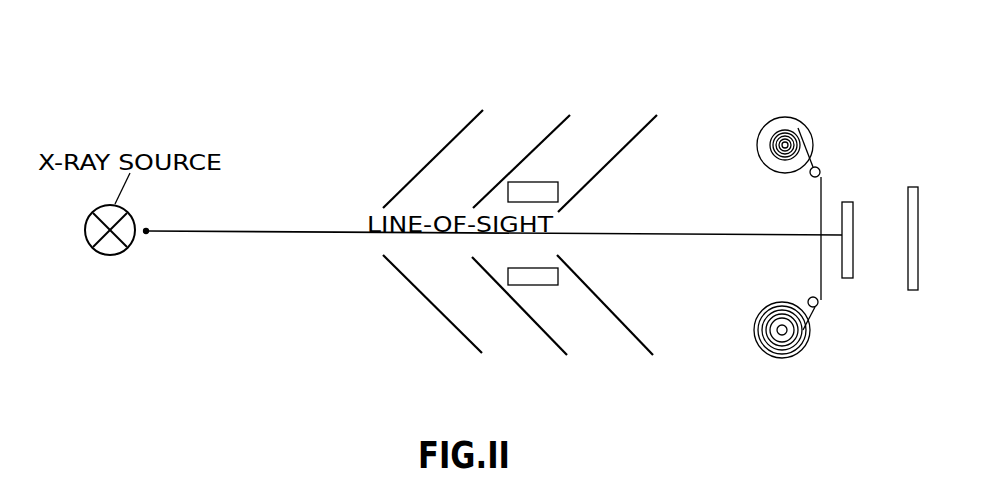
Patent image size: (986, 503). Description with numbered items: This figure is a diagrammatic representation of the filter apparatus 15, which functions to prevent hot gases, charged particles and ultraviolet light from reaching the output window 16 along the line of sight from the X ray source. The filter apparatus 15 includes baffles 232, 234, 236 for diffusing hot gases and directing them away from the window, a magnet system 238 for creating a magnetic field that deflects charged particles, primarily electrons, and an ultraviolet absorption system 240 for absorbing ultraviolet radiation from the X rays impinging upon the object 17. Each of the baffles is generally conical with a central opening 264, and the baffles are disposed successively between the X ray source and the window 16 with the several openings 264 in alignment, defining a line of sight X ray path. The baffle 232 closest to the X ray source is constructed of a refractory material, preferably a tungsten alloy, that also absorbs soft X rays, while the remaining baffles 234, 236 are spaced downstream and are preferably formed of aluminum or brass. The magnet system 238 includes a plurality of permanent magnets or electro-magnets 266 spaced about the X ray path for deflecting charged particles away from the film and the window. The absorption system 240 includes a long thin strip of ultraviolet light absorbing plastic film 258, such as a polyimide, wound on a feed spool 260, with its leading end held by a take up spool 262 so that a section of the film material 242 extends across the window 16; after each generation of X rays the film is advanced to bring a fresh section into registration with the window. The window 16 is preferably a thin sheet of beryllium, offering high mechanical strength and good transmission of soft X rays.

The filter apparatus 15 is at (506, 117).
The baffle 232 is at (420, 293).
The baffle 234 is at (558, 350).
The baffle 236 is at (637, 345).
The magnet system 238 is at (562, 181).
The central opening 264 is at (382, 243).
The permanent magnets or electro-magnets 266 is at (550, 182).
The take up spool 262 is at (790, 115).
The film 242 is at (810, 131).
The ultraviolet light absorbing plastic film 258 is at (823, 178).
The ultraviolet absorption system 240 is at (805, 215).
The output window 16 is at (853, 210).
The object 17 is at (908, 273).
The feed spool 260 is at (803, 352).